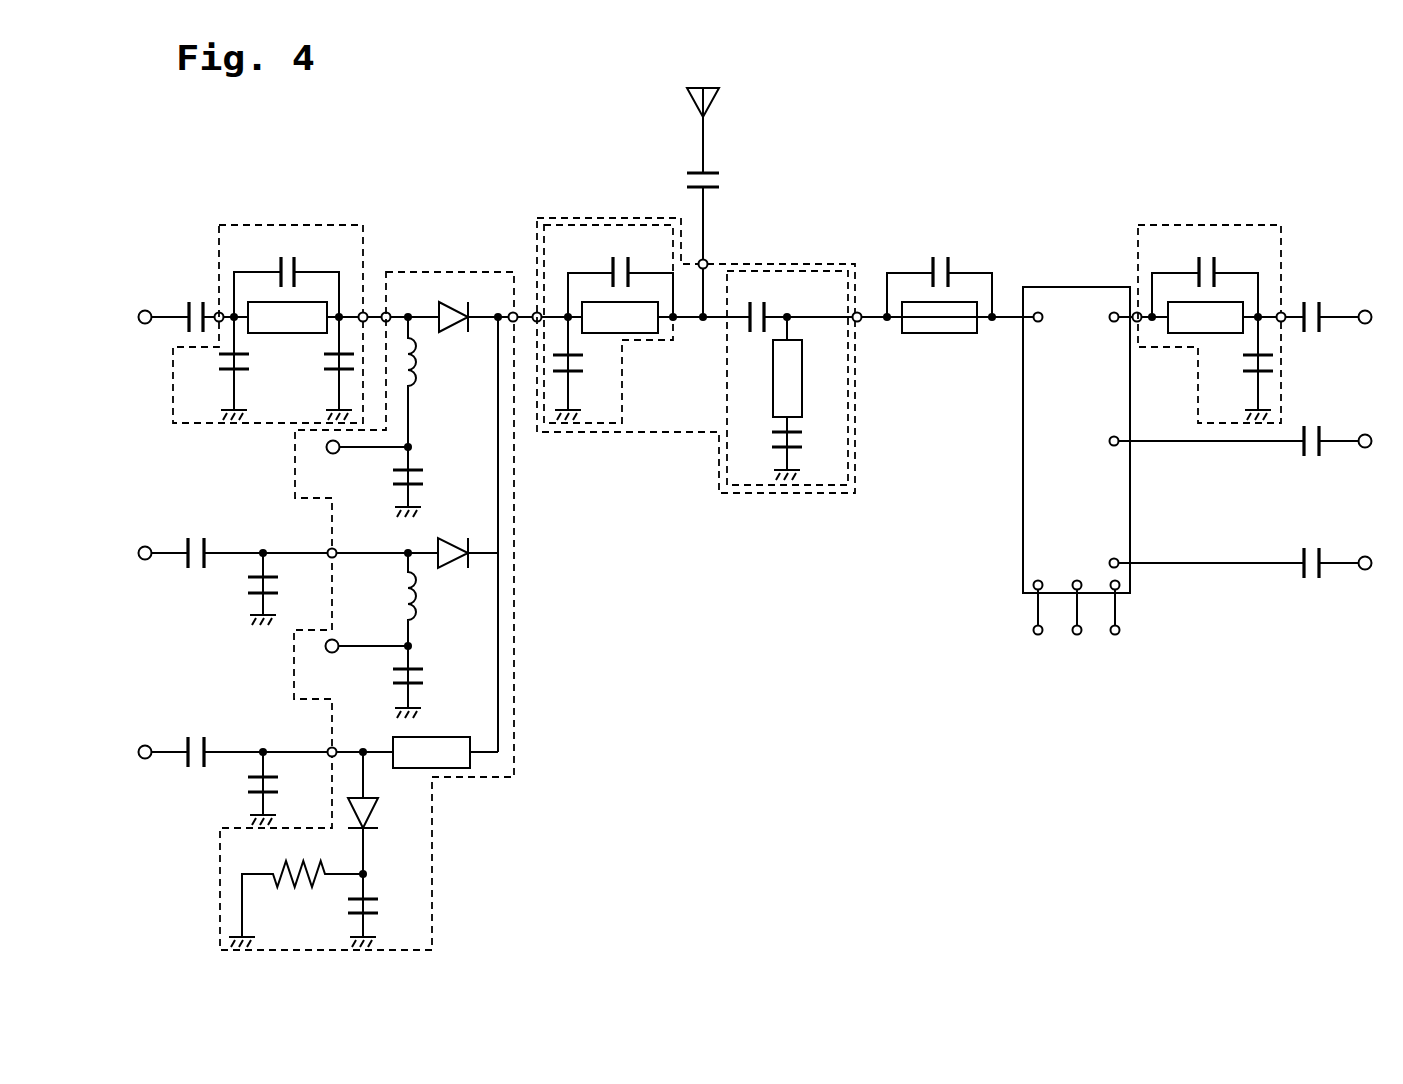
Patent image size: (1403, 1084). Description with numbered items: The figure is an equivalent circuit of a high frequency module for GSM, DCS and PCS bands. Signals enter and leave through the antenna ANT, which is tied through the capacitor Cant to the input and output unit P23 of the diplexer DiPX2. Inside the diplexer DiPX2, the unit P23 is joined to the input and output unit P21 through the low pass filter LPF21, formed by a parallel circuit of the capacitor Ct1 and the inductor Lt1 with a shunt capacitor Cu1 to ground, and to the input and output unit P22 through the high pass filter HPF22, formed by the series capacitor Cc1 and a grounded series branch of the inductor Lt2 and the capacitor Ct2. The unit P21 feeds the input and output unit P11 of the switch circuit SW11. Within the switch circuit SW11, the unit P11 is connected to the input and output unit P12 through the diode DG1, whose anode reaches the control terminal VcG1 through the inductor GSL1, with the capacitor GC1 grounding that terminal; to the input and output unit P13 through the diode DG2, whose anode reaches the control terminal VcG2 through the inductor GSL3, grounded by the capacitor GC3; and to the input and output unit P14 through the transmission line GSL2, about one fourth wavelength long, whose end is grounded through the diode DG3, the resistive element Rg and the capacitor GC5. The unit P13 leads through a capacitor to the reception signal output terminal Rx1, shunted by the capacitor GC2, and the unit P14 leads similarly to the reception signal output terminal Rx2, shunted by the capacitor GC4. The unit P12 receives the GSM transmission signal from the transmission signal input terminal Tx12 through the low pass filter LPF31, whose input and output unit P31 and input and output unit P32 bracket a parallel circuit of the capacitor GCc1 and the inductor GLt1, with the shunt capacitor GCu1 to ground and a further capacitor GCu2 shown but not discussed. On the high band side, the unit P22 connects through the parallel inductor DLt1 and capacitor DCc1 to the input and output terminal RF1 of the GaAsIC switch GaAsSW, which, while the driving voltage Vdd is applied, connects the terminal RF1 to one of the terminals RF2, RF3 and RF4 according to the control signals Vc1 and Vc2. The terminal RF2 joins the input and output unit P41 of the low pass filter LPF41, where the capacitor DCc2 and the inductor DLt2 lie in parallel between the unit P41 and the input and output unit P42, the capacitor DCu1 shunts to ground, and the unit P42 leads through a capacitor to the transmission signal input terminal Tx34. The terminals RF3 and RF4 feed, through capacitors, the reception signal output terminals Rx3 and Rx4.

The antenna ANT is at (719, 186).
The capacitor Cant is at (729, 179).
The transmission signal input terminal Tx12 is at (158, 305).
The input and output unit P32 is at (214, 303).
The low pass filter LPF31 is at (320, 214).
The capacitor GCc1 is at (286, 271).
The inductor GLt1 is at (287, 317).
The capacitor GCu2 is at (215, 368).
The capacitor GCu1 is at (321, 368).
The input and output unit P31 is at (366, 303).
The input and output unit P12 is at (387, 303).
The switch circuit SW11 is at (458, 263).
The diode DG1 is at (453, 302).
The inductor GSL1 is at (438, 382).
The GSM transmission and reception switching control signal input terminal VcG1 is at (355, 462).
The capacitor GC1 is at (427, 482).
The input and output unit P11 is at (514, 303).
The input and output unit P21 is at (535, 332).
The diplexer DiPX2 is at (645, 434).
The low pass filter LPF21 is at (633, 209).
The capacitor Ct1 is at (620, 272).
The inductor Lt1 is at (620, 317).
The capacitor Cu1 is at (585, 368).
The input and output unit P23 is at (716, 258).
The high pass filter HPF22 is at (812, 254).
The capacitor Cc1 is at (756, 302).
The inductor Lt2 is at (787, 374).
The capacitor Ct2 is at (807, 456).
The input and output unit P22 is at (861, 303).
The capacitor DCc1 is at (939, 271).
The inductor DLt1 is at (939, 317).
The GaAsIC switch GaAsSW is at (1076, 444).
The input and output terminal RF1 is at (1045, 305).
The input and output terminal RF2 is at (1107, 305).
The input and output terminal RF3 is at (1107, 428).
The input and output terminal RF4 is at (1107, 549).
The driving voltage signal input terminal Vdd is at (1024, 625).
The control signal input terminal Vc1 is at (1075, 625).
The control signal input terminal Vc2 is at (1122, 625).
The reception signal output terminal Rx3 is at (1347, 433).
The reception signal output terminal Rx4 is at (1347, 555).
The input and output unit P41 is at (1132, 303).
The low pass filter LPF41 is at (1237, 212).
The capacitor DCc2 is at (1205, 272).
The inductor DLt2 is at (1205, 317).
The capacitor DCu1 is at (1239, 368).
The input and output unit P42 is at (1287, 303).
The transmission signal input terminal Tx34 is at (1350, 310).
The reception signal output terminal Rx1 is at (153, 541).
The capacitor GC2 is at (283, 589).
The input and output unit P13 is at (320, 547).
The diode DG2 is at (454, 542).
The inductor GSL3 is at (439, 599).
The GSM transmission and reception switching control signal input terminal VcG2 is at (355, 662).
The capacitor GC3 is at (428, 682).
The reception signal output terminal Rx2 is at (153, 740).
The capacitor GC4 is at (283, 788).
The input and output unit P14 is at (320, 747).
The transmission line GSL2 is at (431, 752).
The diode DG3 is at (383, 813).
The resistive element Rg is at (296, 904).
The capacitor GC5 is at (383, 910).